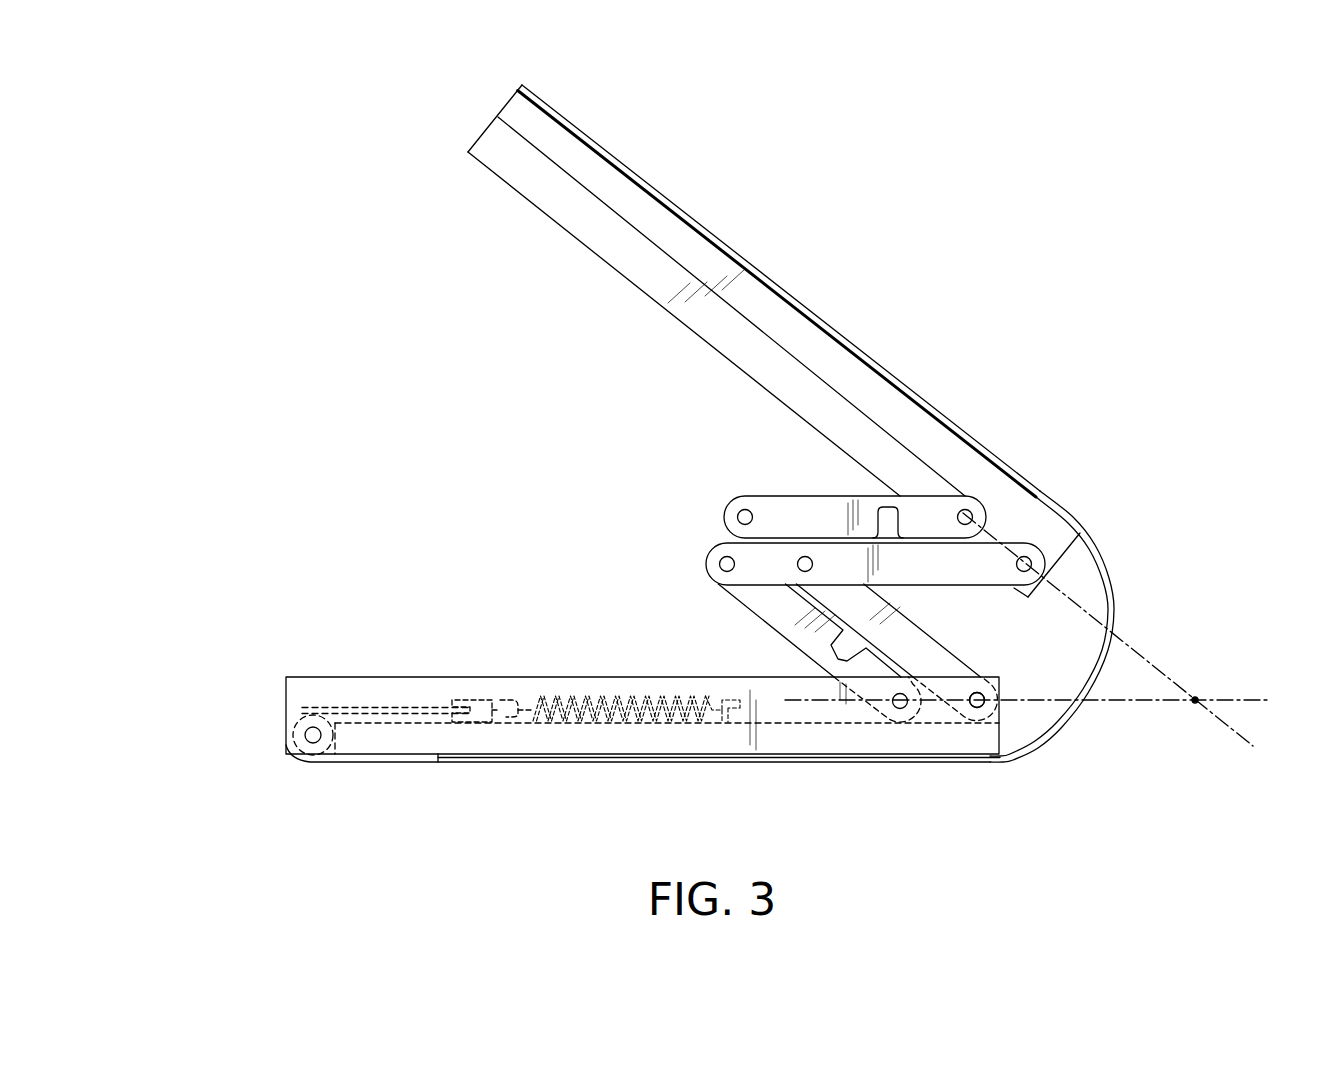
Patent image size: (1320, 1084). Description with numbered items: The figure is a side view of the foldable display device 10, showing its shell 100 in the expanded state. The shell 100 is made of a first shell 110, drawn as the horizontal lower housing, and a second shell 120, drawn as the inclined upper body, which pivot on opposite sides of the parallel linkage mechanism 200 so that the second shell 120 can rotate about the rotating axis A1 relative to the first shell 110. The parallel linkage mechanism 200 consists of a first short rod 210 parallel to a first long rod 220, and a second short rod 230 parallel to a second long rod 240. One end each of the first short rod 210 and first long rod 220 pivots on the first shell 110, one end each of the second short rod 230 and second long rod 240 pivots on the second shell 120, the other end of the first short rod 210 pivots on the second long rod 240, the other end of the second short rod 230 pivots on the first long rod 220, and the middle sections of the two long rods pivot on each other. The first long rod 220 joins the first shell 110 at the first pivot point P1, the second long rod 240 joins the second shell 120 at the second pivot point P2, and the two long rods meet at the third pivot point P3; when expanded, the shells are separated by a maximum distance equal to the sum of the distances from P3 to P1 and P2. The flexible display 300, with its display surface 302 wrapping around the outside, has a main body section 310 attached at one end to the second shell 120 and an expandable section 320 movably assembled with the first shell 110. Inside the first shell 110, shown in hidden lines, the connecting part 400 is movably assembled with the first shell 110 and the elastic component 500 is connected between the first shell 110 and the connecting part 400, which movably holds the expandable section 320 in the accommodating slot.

The foldable display device 10 is at (1052, 168).
The shell 100 is at (431, 355).
The first shell 110 is at (417, 688).
The second shell 120 is at (625, 252).
The parallel linkage mechanism 200 is at (688, 545).
The first short rod 210 is at (808, 632).
The first long rod 220 is at (885, 623).
The second short rod 230 is at (841, 505).
The second long rod 240 is at (917, 563).
The flexible display 300 is at (201, 640).
The display surface 302 is at (806, 304).
The main body section 310 is at (505, 765).
The expandable section 320 is at (363, 707).
The connecting part 400 is at (473, 700).
The elastic component 500 is at (612, 695).
The first pivot point P1 is at (977, 712).
The second pivot point P2 is at (1031, 560).
The third pivot point P3 is at (805, 553).
The rotating axis A1 is at (1195, 702).